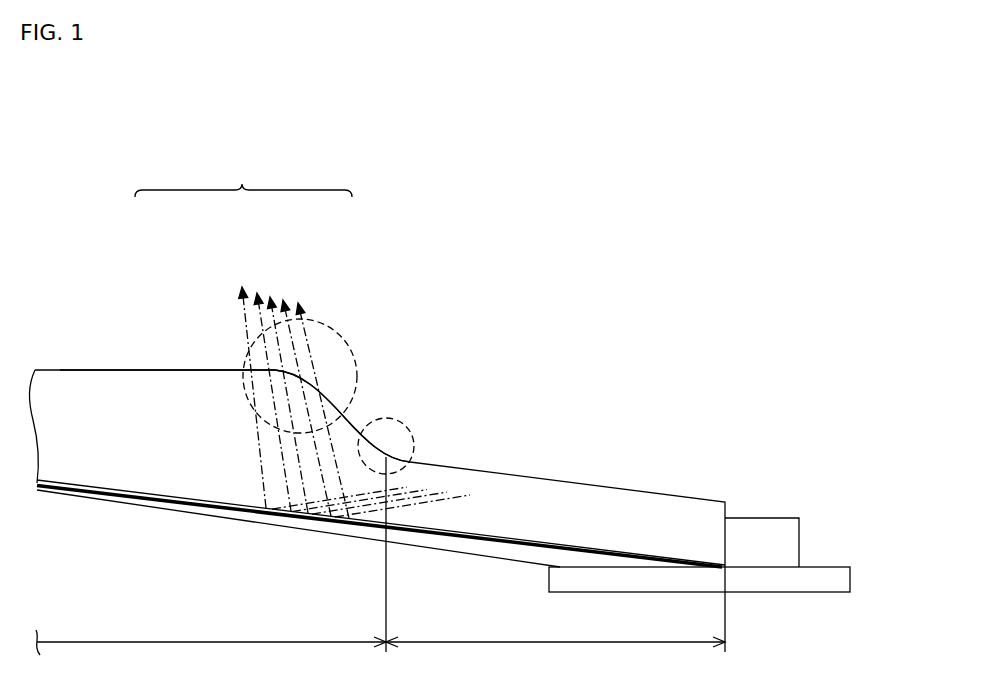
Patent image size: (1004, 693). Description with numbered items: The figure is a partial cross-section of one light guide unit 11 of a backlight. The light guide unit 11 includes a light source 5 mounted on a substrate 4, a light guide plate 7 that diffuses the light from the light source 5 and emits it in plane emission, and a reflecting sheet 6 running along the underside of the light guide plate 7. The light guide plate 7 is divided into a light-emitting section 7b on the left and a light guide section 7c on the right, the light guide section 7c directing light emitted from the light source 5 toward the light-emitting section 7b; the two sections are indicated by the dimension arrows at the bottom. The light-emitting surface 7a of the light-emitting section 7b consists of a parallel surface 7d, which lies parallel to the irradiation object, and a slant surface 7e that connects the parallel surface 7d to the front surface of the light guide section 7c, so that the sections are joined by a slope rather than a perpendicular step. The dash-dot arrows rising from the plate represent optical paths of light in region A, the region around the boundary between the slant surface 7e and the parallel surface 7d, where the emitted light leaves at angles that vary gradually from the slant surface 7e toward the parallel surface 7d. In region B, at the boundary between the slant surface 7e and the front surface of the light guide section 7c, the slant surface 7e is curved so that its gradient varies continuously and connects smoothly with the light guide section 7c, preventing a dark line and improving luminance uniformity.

The light guide unit 11 is at (650, 217).
The light guide plate 7 is at (595, 490).
The light-emitting surface 7a is at (243, 178).
The light-emitting section 7b is at (211, 650).
The light guide section 7c is at (555, 654).
The parallel surface 7d is at (167, 370).
The slant surface 7e is at (344, 418).
The reflecting sheet 6 is at (177, 505).
The light source 5 is at (760, 527).
The substrate 4 is at (800, 586).
The region A is at (250, 350).
The region B is at (406, 424).